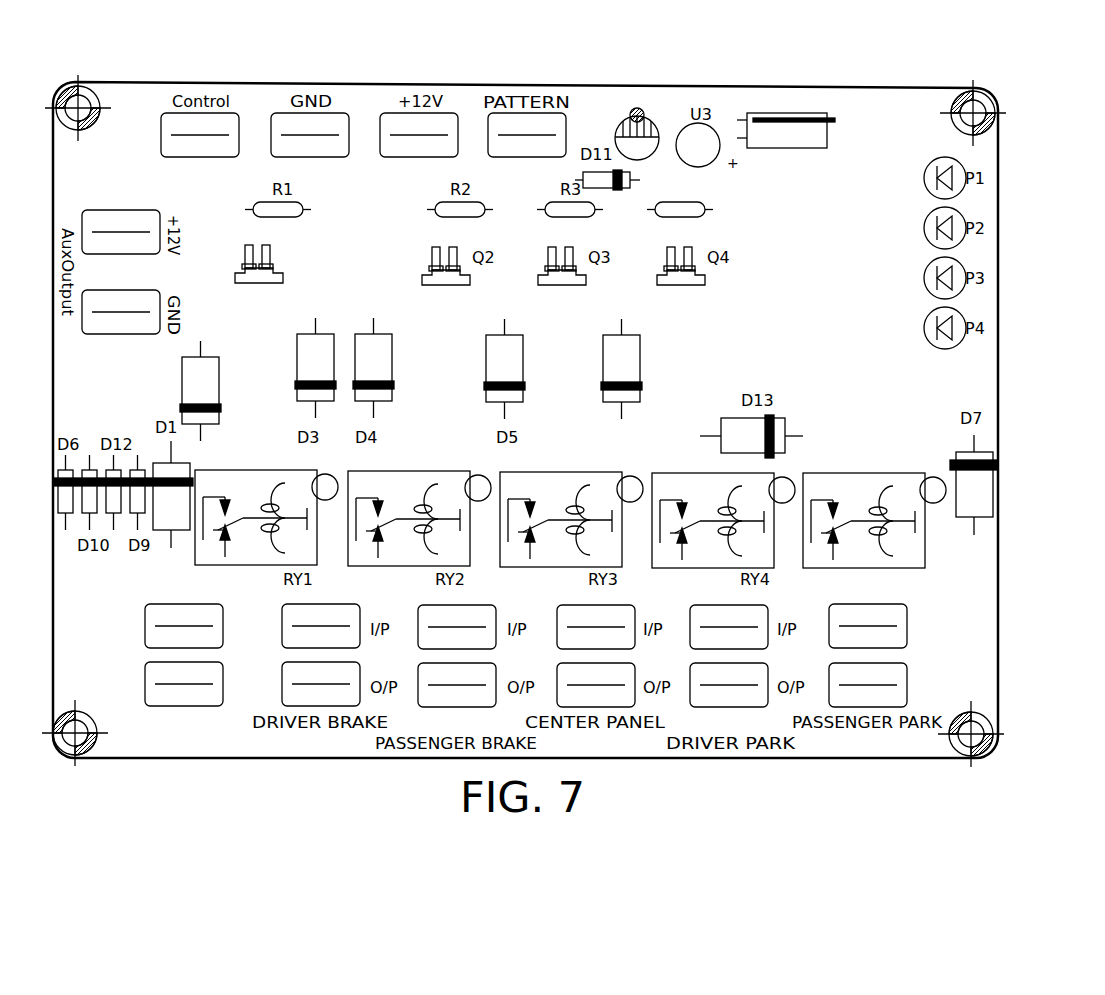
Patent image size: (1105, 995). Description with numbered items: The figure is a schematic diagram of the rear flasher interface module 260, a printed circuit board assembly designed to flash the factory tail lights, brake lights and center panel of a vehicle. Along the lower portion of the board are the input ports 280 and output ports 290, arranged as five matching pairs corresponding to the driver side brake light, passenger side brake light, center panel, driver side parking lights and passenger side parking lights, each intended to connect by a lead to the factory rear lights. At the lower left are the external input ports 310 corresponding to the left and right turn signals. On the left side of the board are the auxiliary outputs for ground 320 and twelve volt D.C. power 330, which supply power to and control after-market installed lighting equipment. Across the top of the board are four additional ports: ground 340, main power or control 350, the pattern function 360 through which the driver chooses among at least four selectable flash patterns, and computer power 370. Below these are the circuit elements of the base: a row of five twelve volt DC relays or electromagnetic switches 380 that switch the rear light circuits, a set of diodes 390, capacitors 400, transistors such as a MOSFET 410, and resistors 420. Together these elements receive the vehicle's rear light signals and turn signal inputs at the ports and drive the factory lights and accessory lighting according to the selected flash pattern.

The rear flasher interface module 260 is at (871, 86).
The input ports 280 is at (946, 628).
The output ports 290 is at (942, 688).
The input port 310 is at (145, 630).
The auxiliary ground output 320 is at (111, 335).
The auxiliary 12V D.C. power output 330 is at (110, 208).
The ground port 340 is at (328, 158).
The main power or control (+12V) port 350 is at (202, 158).
The pattern function port 360 is at (525, 158).
The computer power (+12V) port 370 is at (418, 158).
The 12V DC relays 380 is at (925, 562).
The diodes 390 is at (642, 365).
The capacitors 400 is at (752, 110).
The transistor (MOSFET) 410 is at (283, 276).
The resistors 420 is at (713, 210).